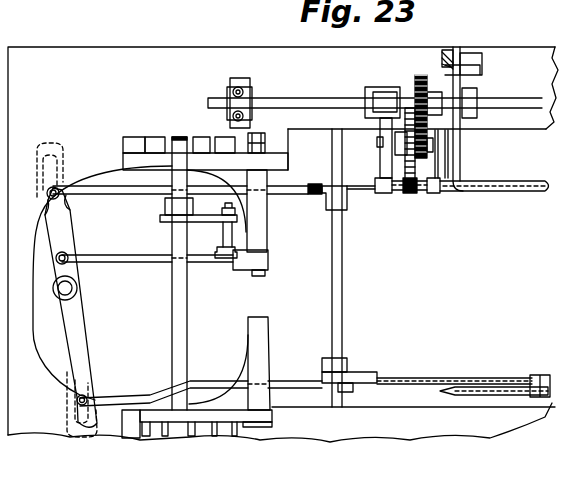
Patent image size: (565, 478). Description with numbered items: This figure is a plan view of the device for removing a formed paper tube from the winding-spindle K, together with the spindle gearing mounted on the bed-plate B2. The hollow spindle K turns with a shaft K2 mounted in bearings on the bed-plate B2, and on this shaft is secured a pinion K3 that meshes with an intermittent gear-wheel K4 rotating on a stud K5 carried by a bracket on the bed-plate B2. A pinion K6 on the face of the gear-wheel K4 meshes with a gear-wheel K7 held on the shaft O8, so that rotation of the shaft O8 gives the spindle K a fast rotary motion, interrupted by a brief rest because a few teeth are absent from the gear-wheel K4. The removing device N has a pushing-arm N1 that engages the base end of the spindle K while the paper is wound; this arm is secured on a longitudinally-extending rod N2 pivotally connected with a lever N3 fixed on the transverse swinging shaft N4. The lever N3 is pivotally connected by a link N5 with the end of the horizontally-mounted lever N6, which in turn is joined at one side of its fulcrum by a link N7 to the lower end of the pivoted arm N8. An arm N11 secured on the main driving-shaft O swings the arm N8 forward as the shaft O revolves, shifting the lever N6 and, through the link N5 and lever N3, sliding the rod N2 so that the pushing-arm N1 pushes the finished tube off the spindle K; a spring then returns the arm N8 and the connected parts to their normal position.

The bed-plate B2 is at (283, 244).
The shaft O8 is at (303, 107).
The gear-wheel K7 is at (415, 77).
The stud K5 is at (380, 143).
The intermittent gear-wheel K4 is at (410, 165).
The pinion K6 is at (436, 162).
The pinion K3 is at (408, 194).
The shaft K2 is at (432, 194).
The arm N1 is at (445, 193).
The spindle K is at (498, 193).
The link N5 is at (282, 195).
The lever N3 is at (317, 200).
The rod N2 is at (363, 190).
The shaft N4 is at (413, 268).
The removing device N is at (234, 285).
The arm N8 is at (260, 272).
The arm N11 is at (217, 208).
The link N7 is at (135, 260).
The main driving-shaft O is at (172, 323).
The lever N6 is at (82, 315).